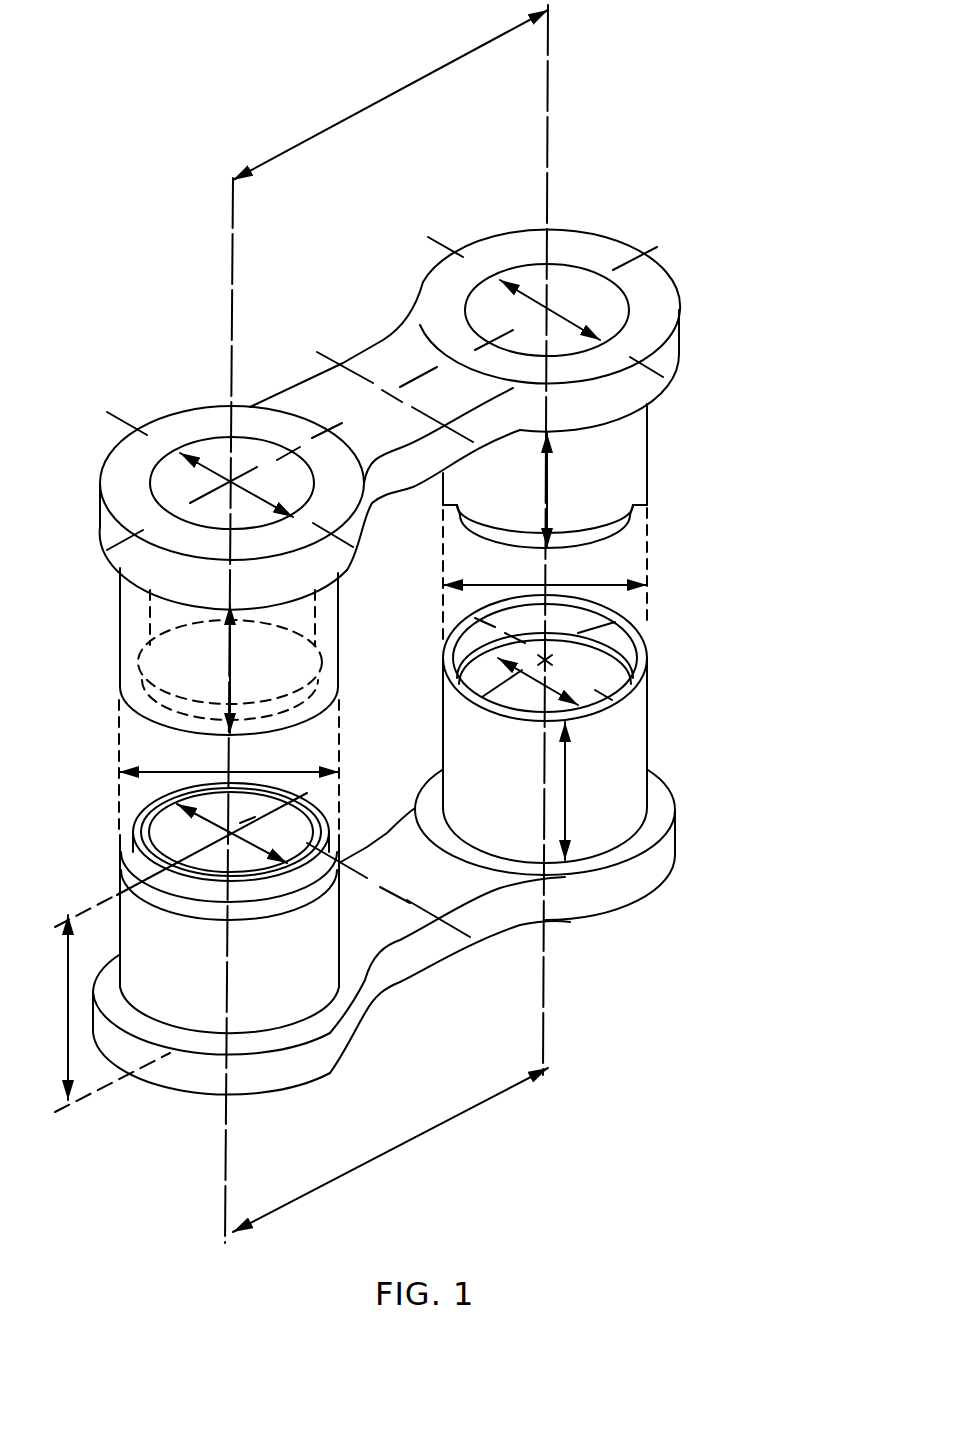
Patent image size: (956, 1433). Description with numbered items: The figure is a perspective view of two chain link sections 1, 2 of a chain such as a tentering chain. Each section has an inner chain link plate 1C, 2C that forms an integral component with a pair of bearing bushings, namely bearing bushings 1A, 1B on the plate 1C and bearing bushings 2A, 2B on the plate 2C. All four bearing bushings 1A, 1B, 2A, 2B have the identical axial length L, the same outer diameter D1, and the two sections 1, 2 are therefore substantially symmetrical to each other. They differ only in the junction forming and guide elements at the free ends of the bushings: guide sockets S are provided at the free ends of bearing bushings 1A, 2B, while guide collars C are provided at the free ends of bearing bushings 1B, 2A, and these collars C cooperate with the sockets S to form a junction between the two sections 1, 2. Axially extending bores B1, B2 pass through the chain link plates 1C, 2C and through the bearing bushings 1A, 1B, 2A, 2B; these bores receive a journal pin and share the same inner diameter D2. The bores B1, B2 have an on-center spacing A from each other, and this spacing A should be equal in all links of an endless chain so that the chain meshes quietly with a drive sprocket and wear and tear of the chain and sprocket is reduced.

The chain link section 1 is at (628, 200).
The bearing bushing 1A is at (177, 658).
The bearing bushing 1B is at (632, 462).
The inner chain link plate 1C is at (647, 363).
The chain link section 2 is at (677, 718).
The bearing bushing 2A is at (203, 1007).
The bearing bushing 2B is at (627, 763).
The inner chain link plate 2C is at (650, 863).
The axially extending bore B1 is at (173, 477).
The axially extending bore B2 is at (582, 278).
The guide collar C is at (607, 528).
The guide socket S is at (635, 650).
The on-center spacing A is at (390, 621).
The axial length L is at (313, 772).
The outer diameter D1 is at (383, 660).
The inner diameter D2 is at (655, 648).